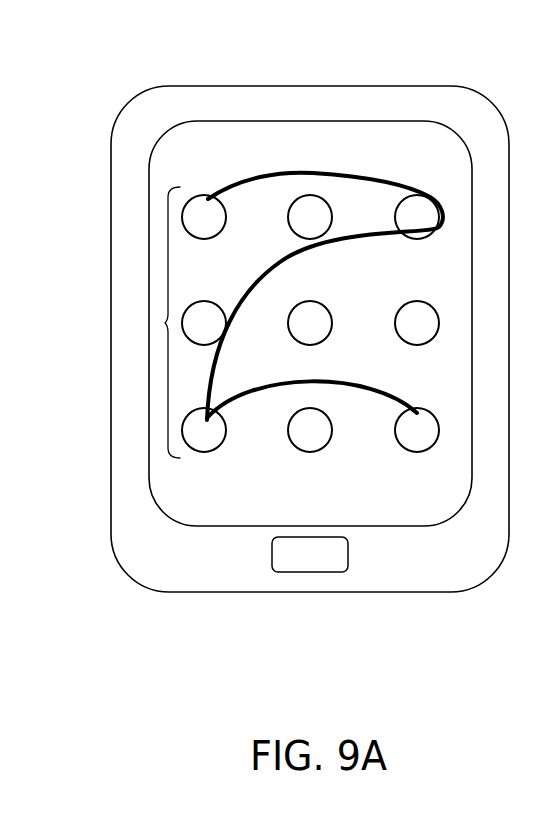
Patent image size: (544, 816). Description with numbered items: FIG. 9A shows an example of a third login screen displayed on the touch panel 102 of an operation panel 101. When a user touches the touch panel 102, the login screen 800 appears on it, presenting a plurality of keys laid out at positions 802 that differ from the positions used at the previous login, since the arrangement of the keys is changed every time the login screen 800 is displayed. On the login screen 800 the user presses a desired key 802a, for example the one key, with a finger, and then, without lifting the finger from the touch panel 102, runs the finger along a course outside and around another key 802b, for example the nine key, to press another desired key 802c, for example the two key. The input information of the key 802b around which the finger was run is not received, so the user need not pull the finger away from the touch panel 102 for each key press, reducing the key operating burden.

The operation panel 101 is at (215, 77).
The touch panel 102 is at (148, 211).
The login screen 800 is at (180, 477).
The positions of the keys 802 is at (165, 323).
The desired key 802a is at (197, 196).
The another key 802b is at (312, 196).
The another desired key 802c is at (416, 196).